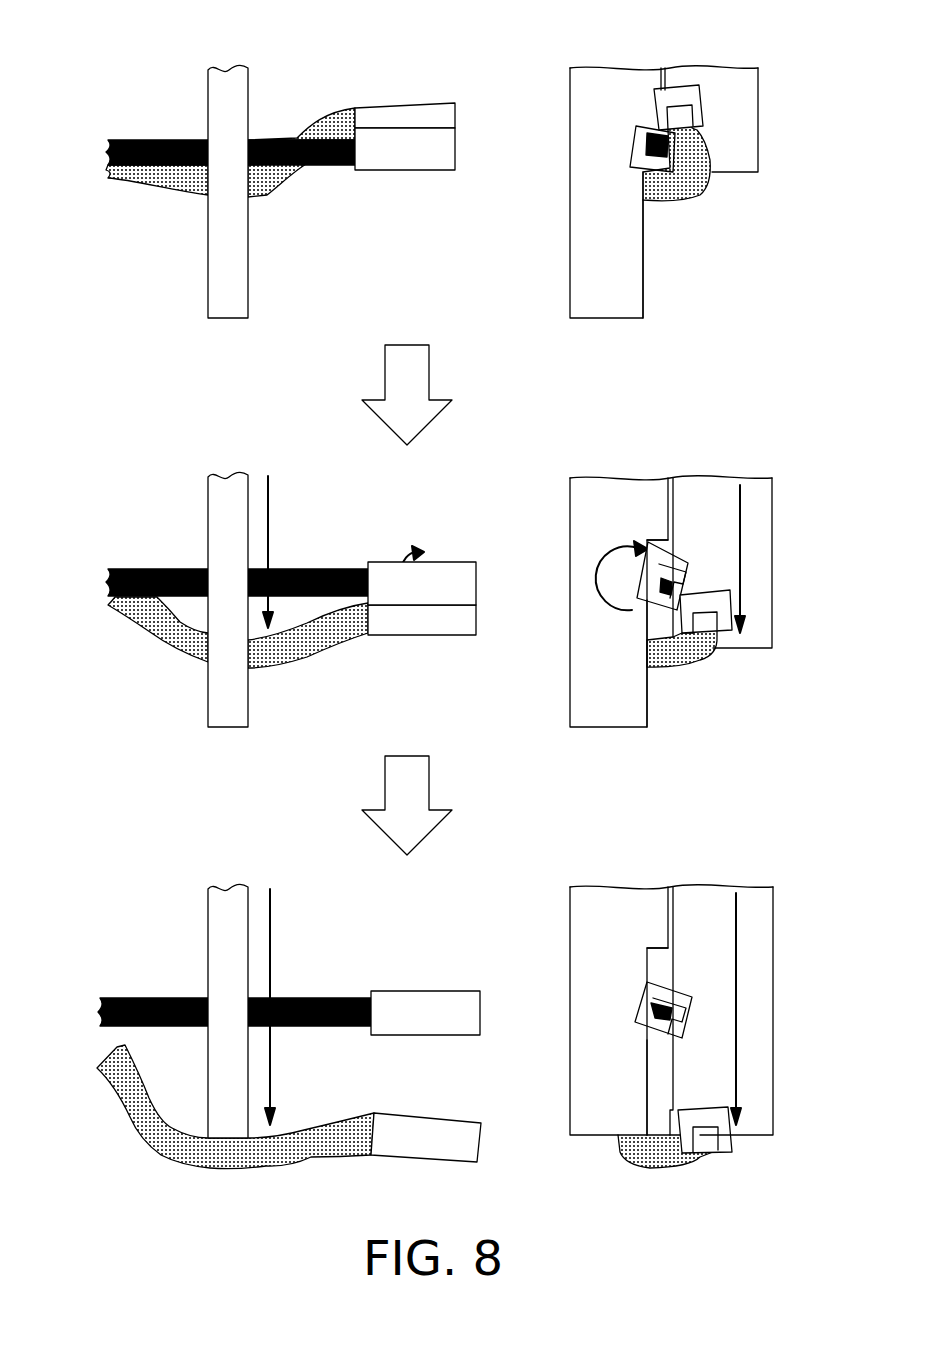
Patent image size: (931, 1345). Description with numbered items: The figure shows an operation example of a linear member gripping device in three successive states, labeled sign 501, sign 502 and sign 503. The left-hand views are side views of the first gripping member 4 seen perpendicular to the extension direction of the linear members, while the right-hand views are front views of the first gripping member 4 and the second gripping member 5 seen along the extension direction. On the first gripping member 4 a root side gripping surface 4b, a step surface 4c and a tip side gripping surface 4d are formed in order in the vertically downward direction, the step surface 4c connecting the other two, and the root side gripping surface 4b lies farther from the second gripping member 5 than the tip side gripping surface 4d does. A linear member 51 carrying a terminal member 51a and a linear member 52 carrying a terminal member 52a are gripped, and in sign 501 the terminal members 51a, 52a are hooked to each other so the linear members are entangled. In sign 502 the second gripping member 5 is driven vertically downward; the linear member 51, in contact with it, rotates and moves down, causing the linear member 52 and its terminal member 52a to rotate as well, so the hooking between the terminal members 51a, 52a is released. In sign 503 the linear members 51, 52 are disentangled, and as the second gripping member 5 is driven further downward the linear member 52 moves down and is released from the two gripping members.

The first gripping member 4 is at (228, 72).
The root side gripping surface 4b is at (672, 500).
The step surface 4c is at (645, 548).
The tip side gripping surface 4d is at (644, 282).
The second gripping member 5 is at (757, 113).
The linear member 51 is at (325, 122).
The terminal member 51a is at (405, 115).
The linear member 52 is at (333, 162).
The terminal member 52a is at (412, 170).
The sign 501 is at (103, 50).
The sign 502 is at (102, 460).
The sign 503 is at (102, 870).